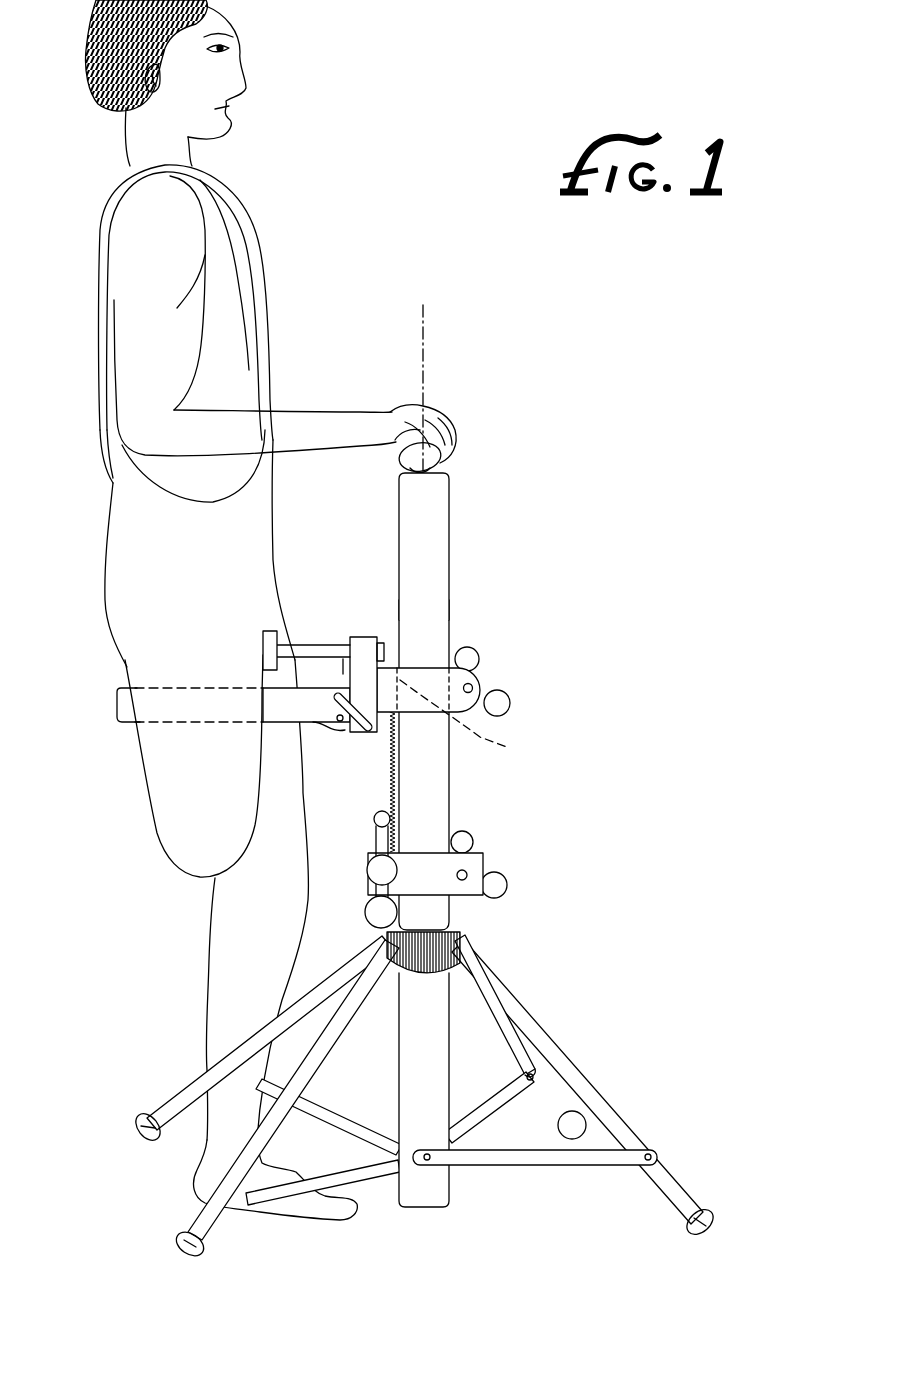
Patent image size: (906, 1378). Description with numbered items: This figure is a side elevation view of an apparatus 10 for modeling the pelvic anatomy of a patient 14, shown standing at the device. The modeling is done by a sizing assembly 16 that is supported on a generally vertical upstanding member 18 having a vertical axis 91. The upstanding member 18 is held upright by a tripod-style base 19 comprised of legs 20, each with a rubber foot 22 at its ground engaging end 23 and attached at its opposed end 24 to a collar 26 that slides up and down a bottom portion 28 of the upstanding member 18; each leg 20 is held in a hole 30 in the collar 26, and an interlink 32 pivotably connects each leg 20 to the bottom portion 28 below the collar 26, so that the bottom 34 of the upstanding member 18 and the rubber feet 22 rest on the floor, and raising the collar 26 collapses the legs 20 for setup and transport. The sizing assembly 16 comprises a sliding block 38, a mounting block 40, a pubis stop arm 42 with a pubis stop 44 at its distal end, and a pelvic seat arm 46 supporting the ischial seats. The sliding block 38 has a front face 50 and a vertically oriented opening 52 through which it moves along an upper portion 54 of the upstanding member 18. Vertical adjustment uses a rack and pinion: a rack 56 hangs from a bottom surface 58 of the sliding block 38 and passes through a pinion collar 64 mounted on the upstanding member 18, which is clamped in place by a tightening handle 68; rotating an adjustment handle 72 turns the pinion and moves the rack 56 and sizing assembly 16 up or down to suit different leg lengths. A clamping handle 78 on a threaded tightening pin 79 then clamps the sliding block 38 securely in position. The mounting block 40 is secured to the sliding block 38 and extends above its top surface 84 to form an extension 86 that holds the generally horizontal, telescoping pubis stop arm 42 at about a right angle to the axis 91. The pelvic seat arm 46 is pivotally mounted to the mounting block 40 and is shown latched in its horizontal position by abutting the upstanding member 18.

The apparatus 10 is at (518, 492).
The patient 14 is at (108, 486).
The sizing assembly 16 is at (420, 867).
The upstanding member 18 is at (427, 800).
The base 19 is at (420, 1096).
The legs 20 is at (439, 1094).
The rubber foot 22 is at (148, 1129).
The ground engaging end 23 is at (210, 1230).
The opposed end 24 is at (387, 947).
The collar 26 is at (436, 966).
The bottom portion 28 is at (418, 1093).
The hole 30 is at (462, 934).
The interlink 32 is at (357, 1177).
The bottom 34 is at (433, 1212).
The sliding block 38 is at (477, 662).
The mounting block 40 is at (367, 697).
The pubis stop arm 42 is at (257, 618).
The pubis stop 44 is at (265, 642).
The pelvic seat arm 46 is at (310, 713).
The front face 50 is at (372, 678).
The opening 52 is at (466, 719).
The upper portion 54 is at (405, 523).
The rack 56 is at (390, 800).
The bottom surface 58 is at (420, 713).
The pinion collar 64 is at (372, 838).
The tightening handle 68 is at (490, 887).
The adjustment handle 72 is at (378, 908).
The clamping handle 78 is at (498, 703).
The threaded tightening pin 79 is at (472, 684).
The top surface 84 is at (413, 660).
The extension 86 is at (363, 650).
The vertical axis 91 is at (423, 343).